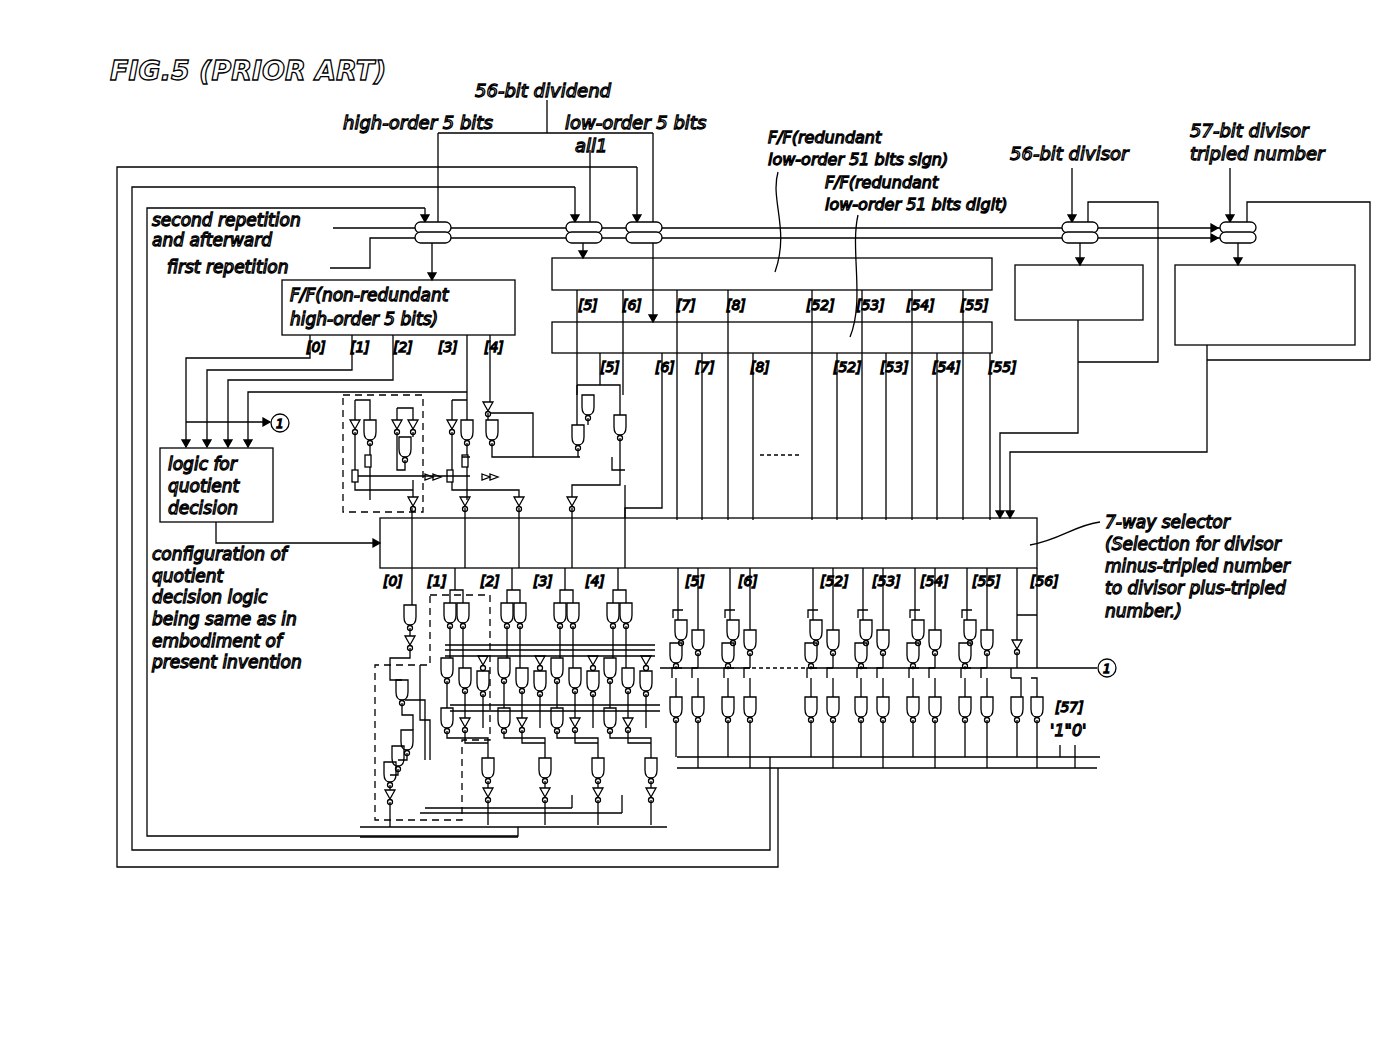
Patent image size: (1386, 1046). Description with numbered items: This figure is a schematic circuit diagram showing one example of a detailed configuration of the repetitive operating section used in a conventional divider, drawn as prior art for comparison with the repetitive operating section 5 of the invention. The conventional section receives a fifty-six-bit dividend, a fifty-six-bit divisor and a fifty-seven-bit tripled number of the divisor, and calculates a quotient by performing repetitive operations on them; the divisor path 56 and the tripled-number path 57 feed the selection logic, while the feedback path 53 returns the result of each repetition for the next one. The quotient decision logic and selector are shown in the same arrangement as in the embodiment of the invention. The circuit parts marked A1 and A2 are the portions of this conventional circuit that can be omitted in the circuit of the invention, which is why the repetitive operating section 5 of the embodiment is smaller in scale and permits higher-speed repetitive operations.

The repetitive operating section 5 is at (245, 843).
The partial remainder feedback path 53 is at (295, 858).
The 56-bit divisor line 56 is at (1070, 413).
The 57-bit divisor tripled number line 57 is at (1202, 413).
The circuit part A1 is at (343, 478).
The circuit part A2 is at (375, 783).